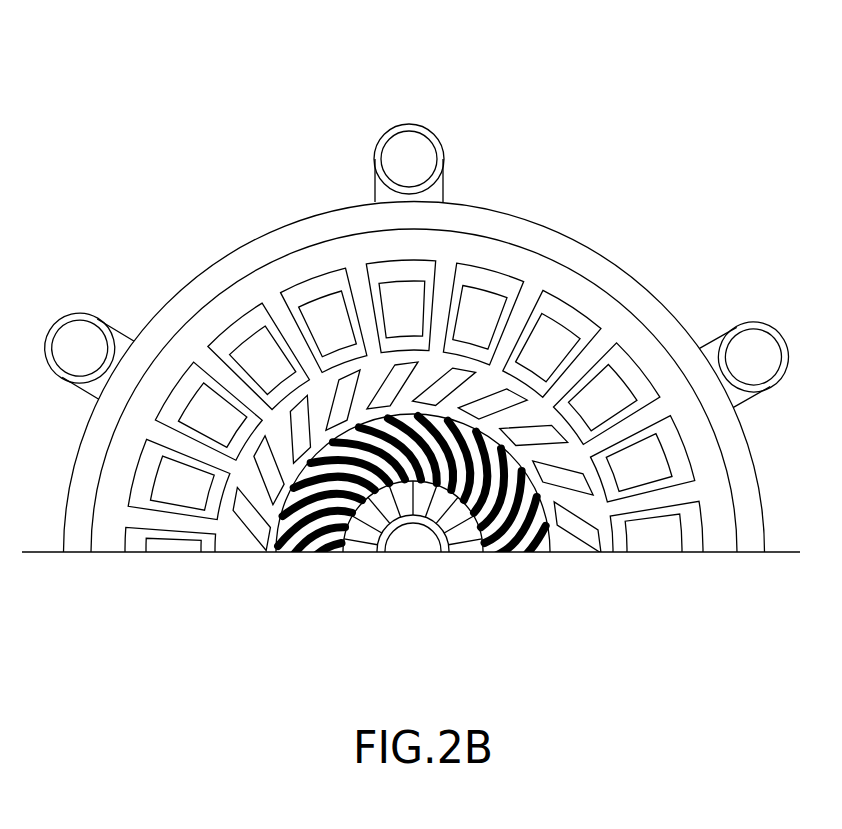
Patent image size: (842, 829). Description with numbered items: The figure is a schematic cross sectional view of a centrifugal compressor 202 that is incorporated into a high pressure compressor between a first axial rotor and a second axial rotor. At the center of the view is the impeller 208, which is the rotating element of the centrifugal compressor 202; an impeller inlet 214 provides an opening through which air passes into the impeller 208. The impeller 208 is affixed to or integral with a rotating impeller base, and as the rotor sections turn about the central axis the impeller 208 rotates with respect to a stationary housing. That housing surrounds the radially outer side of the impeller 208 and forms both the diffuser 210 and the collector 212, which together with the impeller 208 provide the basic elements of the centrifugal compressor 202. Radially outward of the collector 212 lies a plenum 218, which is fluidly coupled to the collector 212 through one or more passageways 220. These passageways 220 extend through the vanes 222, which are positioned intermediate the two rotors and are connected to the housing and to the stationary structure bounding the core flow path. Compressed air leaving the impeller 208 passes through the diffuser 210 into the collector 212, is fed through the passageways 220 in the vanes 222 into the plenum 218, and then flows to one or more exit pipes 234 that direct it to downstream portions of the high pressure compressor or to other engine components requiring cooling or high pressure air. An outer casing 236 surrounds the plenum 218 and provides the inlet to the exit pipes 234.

The centrifugal compressor 202 is at (124, 174).
The impeller 208 is at (521, 530).
The diffuser 210 is at (244, 530).
The collector 212 is at (597, 503).
The impeller inlet 214 is at (457, 528).
The plenum 218 is at (597, 300).
The passageways 220 is at (521, 318).
The vanes 222 is at (480, 275).
The exit pipes 234 is at (434, 136).
The outer casing 236 is at (264, 248).